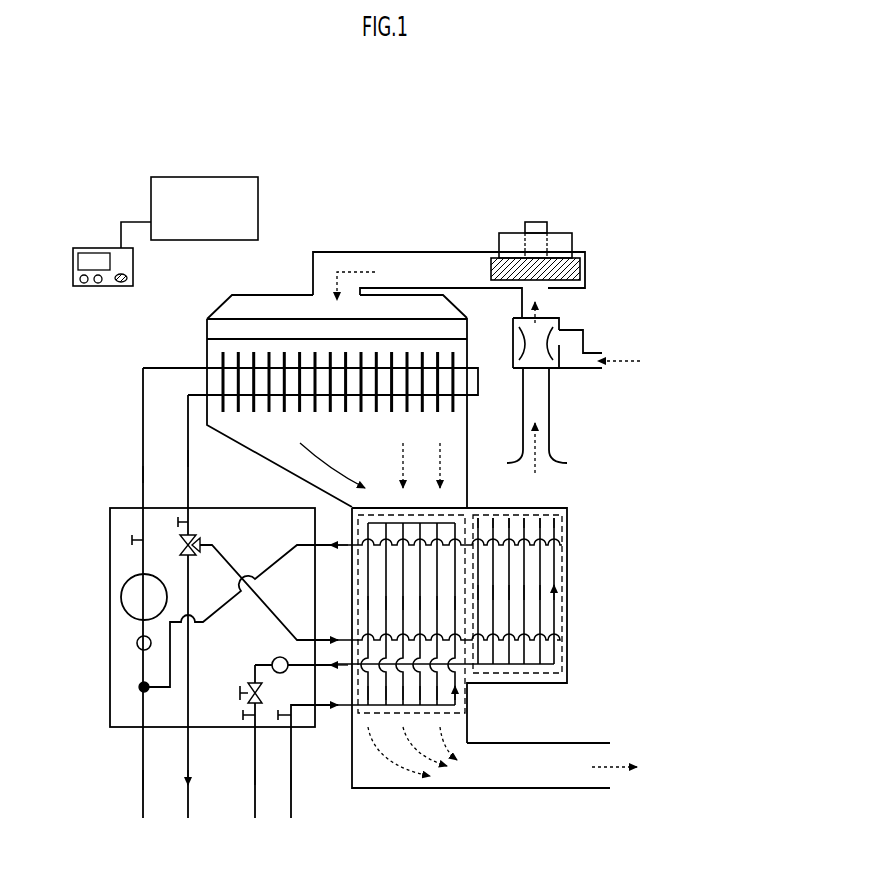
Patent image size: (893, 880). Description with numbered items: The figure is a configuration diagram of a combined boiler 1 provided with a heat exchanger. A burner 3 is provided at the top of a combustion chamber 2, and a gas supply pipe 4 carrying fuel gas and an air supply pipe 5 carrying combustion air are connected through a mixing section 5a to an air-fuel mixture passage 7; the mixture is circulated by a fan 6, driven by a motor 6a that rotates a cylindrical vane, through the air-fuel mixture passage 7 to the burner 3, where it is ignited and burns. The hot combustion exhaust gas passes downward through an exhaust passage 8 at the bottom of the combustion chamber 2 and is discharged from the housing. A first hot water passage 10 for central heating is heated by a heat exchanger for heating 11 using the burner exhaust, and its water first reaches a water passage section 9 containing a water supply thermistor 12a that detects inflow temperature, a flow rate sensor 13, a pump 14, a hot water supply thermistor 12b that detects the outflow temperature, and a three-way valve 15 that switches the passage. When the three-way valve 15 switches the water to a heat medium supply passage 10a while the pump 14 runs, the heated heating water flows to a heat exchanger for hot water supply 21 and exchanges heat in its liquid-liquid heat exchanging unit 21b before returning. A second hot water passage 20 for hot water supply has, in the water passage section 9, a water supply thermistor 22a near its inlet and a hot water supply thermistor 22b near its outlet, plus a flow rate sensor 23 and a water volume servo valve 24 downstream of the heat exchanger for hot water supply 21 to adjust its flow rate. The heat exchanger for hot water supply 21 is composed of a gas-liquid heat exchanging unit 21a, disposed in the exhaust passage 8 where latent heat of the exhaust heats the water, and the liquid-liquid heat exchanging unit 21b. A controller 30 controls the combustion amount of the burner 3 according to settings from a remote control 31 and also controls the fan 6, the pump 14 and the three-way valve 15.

The combined boiler 1 is at (610, 185).
The combustion chamber 2 is at (470, 430).
The burner 3 is at (208, 317).
The gas supply pipe 4 is at (588, 347).
The air supply pipe 5 is at (550, 404).
The mixing section 5a is at (513, 326).
The fan 6 is at (585, 266).
The motor 6a is at (552, 232).
The air-fuel mixture passage 7 is at (395, 252).
The exhaust passage 8 is at (366, 790).
The water passage section 9 is at (110, 703).
The first hot water passage 10 is at (140, 772).
The heat medium supply passage 10a is at (240, 572).
The heat exchanger for heating 11 is at (233, 416).
The water supply thermistor 12a is at (131, 540).
The hot water supply thermistor 12b is at (177, 520).
The flow rate sensor 13 is at (137, 644).
The pump 14 is at (121, 602).
The three-way valve 15 is at (197, 537).
The second hot water passage 20 is at (294, 770).
The heat exchanger for hot water supply 21 is at (487, 625).
The gas-liquid heat exchanging unit 21a is at (475, 697).
The liquid-liquid heat exchanging unit 21b is at (548, 684).
The water supply thermistor 22a is at (278, 728).
The hot water supply thermistor 22b is at (243, 728).
The flow rate sensor 23 is at (271, 662).
The water volume servo valve 24 is at (239, 692).
The controller 30 is at (233, 177).
The remote control 31 is at (93, 248).